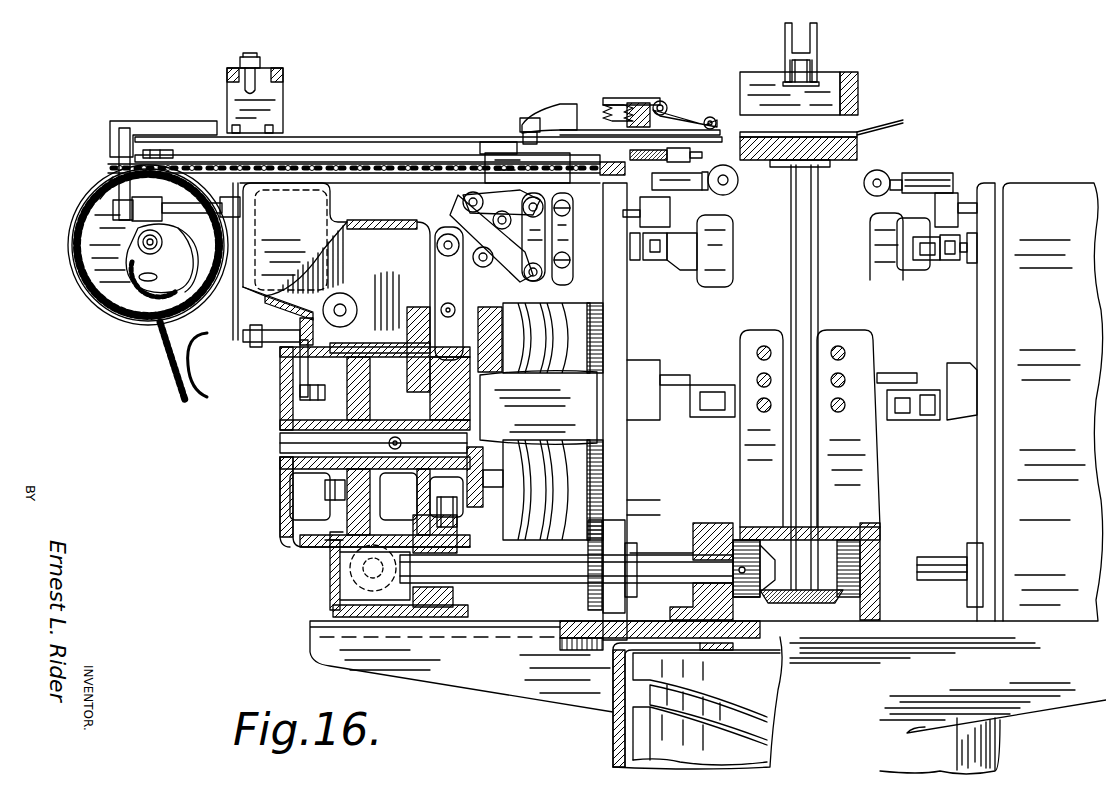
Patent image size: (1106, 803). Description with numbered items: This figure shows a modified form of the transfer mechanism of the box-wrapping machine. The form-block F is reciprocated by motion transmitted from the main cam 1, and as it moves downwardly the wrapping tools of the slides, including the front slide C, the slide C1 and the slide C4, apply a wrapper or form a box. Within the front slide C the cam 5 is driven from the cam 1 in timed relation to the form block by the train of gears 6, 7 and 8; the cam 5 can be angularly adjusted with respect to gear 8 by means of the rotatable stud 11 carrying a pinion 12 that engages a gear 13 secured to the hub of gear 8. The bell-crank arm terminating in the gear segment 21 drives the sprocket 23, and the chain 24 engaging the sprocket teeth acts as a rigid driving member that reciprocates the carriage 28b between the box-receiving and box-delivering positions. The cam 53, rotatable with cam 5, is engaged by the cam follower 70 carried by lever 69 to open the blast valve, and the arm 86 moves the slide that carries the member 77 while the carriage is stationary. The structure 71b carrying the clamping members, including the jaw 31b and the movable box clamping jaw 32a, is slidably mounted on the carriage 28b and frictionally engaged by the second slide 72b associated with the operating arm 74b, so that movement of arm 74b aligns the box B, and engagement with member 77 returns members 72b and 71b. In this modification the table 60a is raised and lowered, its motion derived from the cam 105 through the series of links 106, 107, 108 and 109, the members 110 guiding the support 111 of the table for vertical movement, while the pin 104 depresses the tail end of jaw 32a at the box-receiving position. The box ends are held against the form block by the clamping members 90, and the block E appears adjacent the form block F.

The cam 1 is at (640, 745).
The cam 5 is at (330, 548).
The gear 6 is at (801, 392).
The gear 7 is at (757, 540).
The gear 8 is at (440, 525).
The rotatable stud 11 is at (325, 490).
The pinion 12 is at (345, 568).
The gear 13 is at (280, 465).
The gear segment 21 is at (180, 370).
The sprocket 23 is at (95, 270).
The chain 24 is at (285, 170).
The cam 53 is at (320, 510).
The table 60a is at (365, 137).
The lever 69 is at (300, 368).
The cam follower 70 is at (320, 397).
The structure carrying the clamping members 71b is at (690, 112).
The second slide 72b is at (642, 103).
The operating arm 74b is at (535, 118).
The member 77 is at (150, 121).
The arm 86 is at (120, 165).
The clamping members 90 is at (815, 55).
The pin 104 is at (280, 90).
The cam 105 is at (512, 375).
The link 106 is at (440, 258).
The link 107 is at (480, 230).
The link 108 is at (497, 200).
The link 109 is at (540, 250).
The guiding members 110 is at (430, 300).
The support 111 is at (500, 150).
The carriage 28b is at (568, 104).
The jaw 31b is at (682, 190).
The movable box clamping jaw 32a is at (615, 98).
The box B is at (900, 125).
The front slide C is at (615, 338).
The slide C1 is at (1035, 195).
The slide C4 is at (860, 348).
The block E is at (765, 88).
The form-block F is at (858, 92).